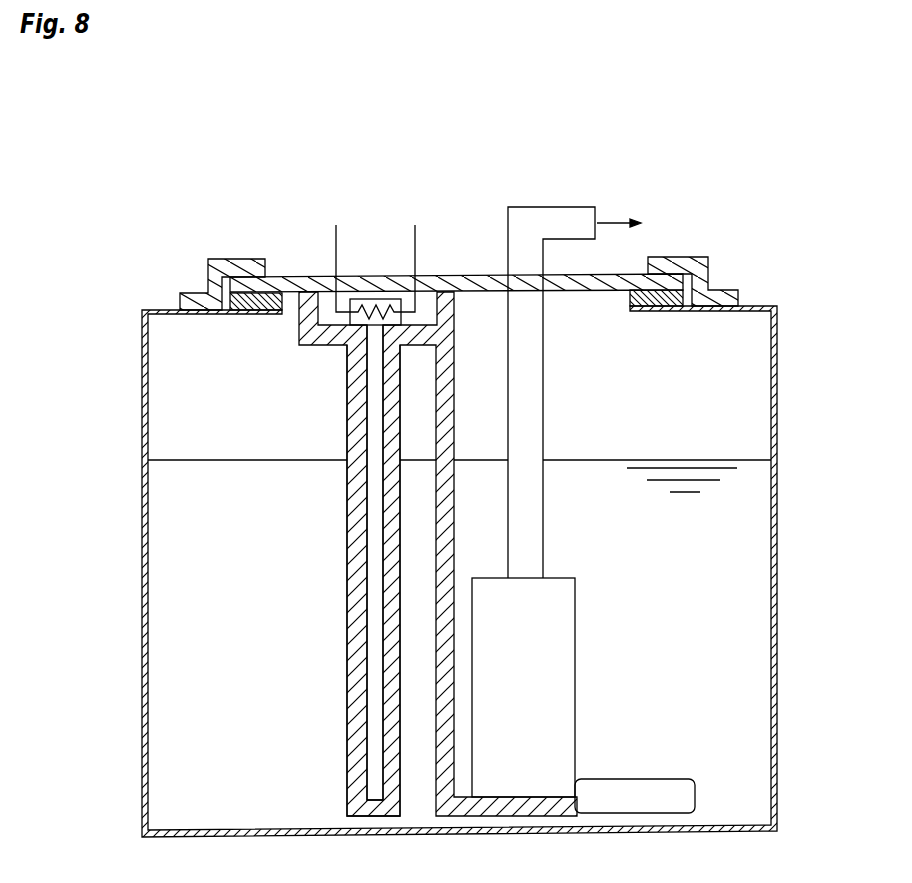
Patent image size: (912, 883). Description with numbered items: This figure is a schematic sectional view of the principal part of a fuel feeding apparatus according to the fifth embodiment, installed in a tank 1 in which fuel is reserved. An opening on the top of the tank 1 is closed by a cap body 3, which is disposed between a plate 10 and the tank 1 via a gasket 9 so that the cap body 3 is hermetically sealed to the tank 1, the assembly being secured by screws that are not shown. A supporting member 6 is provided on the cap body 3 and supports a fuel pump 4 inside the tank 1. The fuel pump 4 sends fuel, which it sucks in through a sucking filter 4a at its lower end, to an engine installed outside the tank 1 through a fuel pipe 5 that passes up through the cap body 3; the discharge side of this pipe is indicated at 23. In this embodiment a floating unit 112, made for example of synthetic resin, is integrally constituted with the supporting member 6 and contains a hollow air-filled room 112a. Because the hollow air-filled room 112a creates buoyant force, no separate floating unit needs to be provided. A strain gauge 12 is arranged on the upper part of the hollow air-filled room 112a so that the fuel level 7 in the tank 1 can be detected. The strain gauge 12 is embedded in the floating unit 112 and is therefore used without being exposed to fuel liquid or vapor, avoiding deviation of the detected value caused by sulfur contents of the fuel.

The tank 1 is at (777, 353).
The cap body 3 is at (618, 277).
The fuel pump 4 is at (575, 677).
The sucking filter 4a is at (636, 779).
The fuel pipe 5 is at (543, 389).
The supporting member 6 is at (454, 533).
The fuel level 7 is at (717, 457).
The gasket 9 is at (672, 288).
The plate 10 is at (725, 288).
The strain gauge 12 is at (380, 299).
The discharge port 23 is at (466, 240).
The floating unit 112 is at (345, 530).
The hollow air-filled room 112a is at (376, 570).